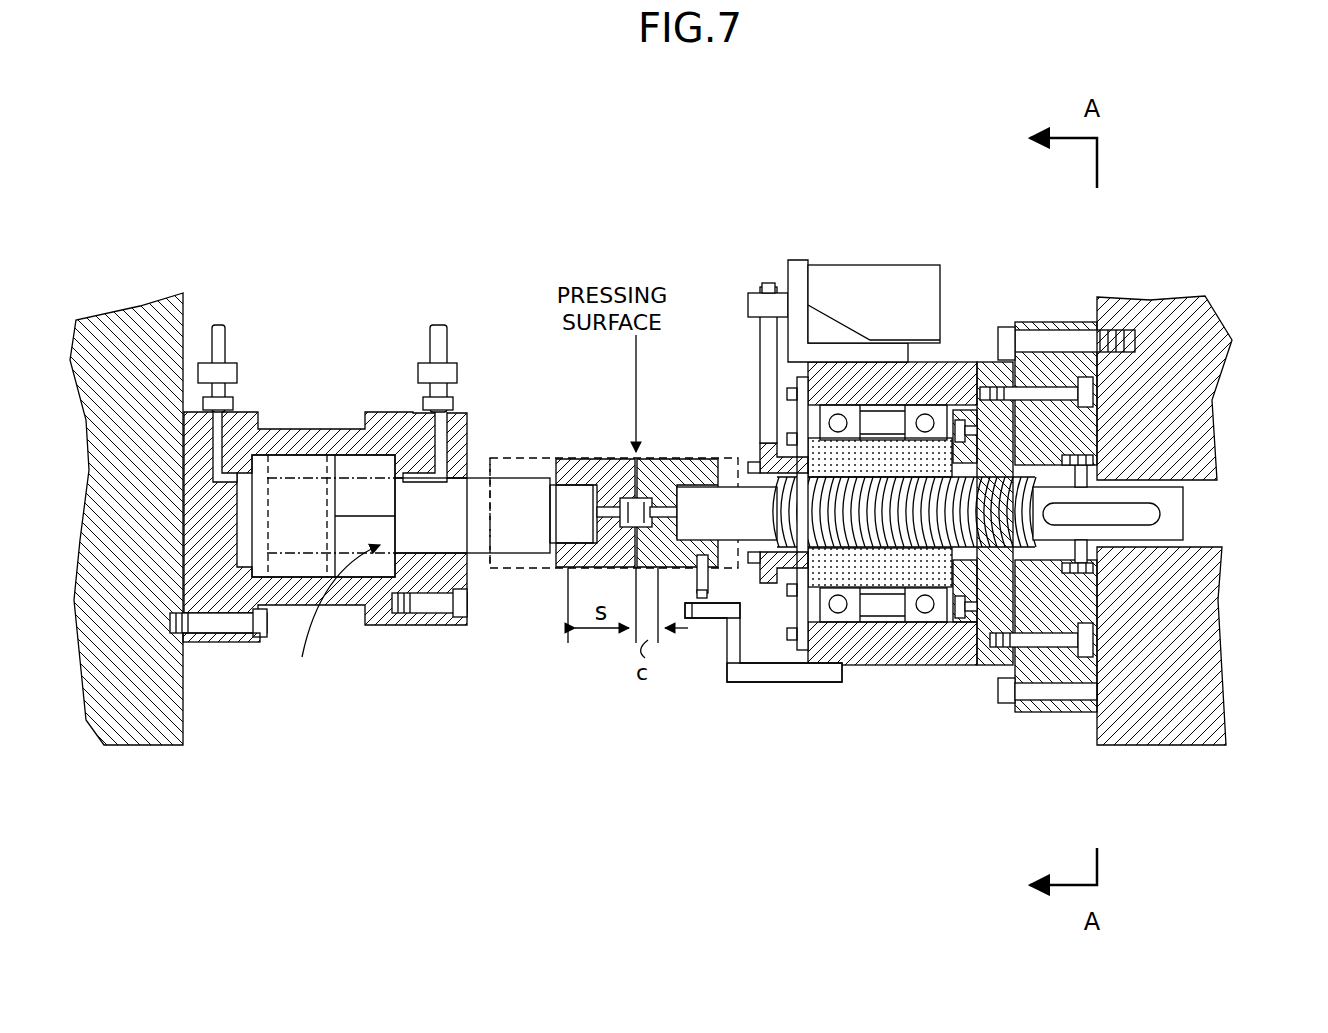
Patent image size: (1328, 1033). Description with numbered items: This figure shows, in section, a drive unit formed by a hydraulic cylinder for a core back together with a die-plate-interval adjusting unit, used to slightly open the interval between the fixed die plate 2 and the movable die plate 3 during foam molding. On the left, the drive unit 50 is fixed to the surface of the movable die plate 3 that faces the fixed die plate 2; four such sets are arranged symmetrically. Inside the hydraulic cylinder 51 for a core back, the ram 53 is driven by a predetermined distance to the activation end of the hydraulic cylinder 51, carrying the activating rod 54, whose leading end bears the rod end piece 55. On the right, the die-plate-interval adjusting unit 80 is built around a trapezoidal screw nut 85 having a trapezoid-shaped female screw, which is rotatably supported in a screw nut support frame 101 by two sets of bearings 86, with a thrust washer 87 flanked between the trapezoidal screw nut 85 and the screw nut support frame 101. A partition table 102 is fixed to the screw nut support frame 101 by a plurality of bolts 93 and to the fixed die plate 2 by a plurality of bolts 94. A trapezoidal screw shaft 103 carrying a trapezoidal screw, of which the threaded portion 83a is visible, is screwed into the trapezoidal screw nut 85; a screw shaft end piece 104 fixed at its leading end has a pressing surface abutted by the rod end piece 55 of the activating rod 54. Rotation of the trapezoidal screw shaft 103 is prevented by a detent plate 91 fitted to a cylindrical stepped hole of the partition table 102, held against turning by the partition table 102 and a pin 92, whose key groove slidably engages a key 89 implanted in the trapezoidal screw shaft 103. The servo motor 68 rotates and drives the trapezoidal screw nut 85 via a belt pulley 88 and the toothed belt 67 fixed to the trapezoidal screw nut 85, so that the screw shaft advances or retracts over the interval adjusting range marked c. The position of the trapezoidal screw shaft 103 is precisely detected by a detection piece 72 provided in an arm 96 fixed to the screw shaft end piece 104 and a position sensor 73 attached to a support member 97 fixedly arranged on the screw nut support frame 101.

The fixed die plate 2 is at (1100, 745).
The movable die plate 3 is at (183, 720).
The drive unit 50 is at (370, 298).
The hydraulic cylinder for a core back 51 is at (273, 428).
The ram 53 is at (320, 460).
The activating rod 54 is at (475, 478).
The rod end piece 55 is at (577, 460).
The toothed belt 67 is at (760, 347).
The servo motor 68 is at (877, 265).
The detection piece 72 is at (693, 610).
The position sensor 73 is at (717, 618).
The die-plate-interval adjusting unit 80 is at (712, 255).
The screw shaft 83a is at (773, 498).
The trapezoidal screw nut 85 is at (793, 577).
The bearings 86 is at (850, 622).
The thrust washer 87 is at (960, 560).
The belt pulley 88 is at (760, 447).
The key 89 is at (1137, 517).
The detent plate 91 is at (1090, 553).
The pin 92 is at (1183, 490).
The bolts 93 is at (1025, 712).
The bolts 94 is at (1038, 345).
The arm 96 is at (688, 582).
The support member 97 is at (747, 682).
The screw nut support frame 101 is at (933, 665).
The partition table 102 is at (1057, 549).
The trapezoidal screw shaft 103 is at (698, 592).
The screw shaft end piece 104 is at (678, 457).